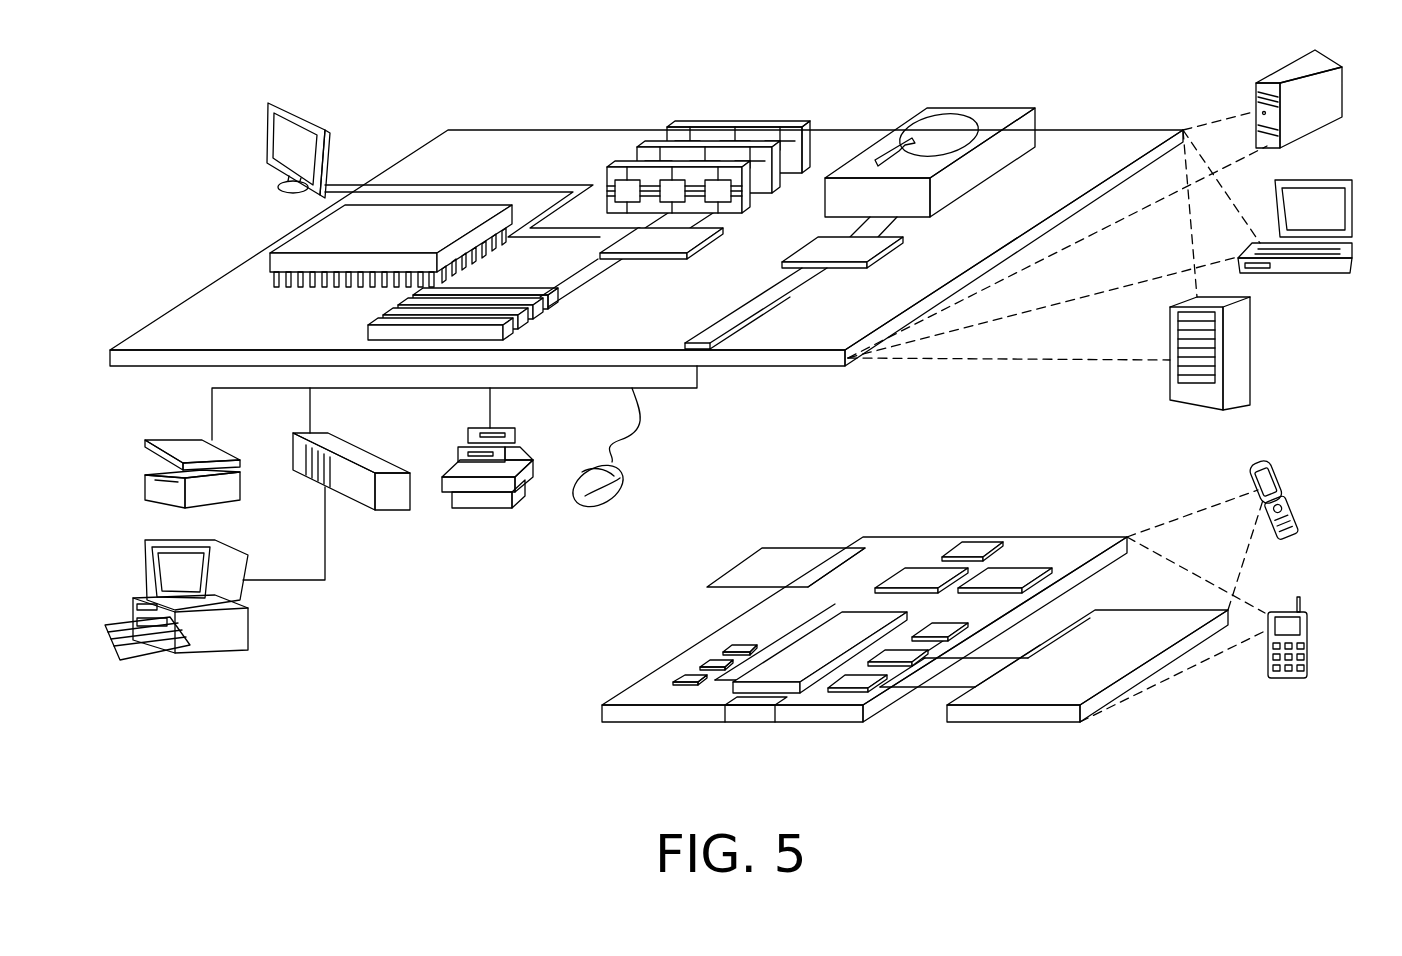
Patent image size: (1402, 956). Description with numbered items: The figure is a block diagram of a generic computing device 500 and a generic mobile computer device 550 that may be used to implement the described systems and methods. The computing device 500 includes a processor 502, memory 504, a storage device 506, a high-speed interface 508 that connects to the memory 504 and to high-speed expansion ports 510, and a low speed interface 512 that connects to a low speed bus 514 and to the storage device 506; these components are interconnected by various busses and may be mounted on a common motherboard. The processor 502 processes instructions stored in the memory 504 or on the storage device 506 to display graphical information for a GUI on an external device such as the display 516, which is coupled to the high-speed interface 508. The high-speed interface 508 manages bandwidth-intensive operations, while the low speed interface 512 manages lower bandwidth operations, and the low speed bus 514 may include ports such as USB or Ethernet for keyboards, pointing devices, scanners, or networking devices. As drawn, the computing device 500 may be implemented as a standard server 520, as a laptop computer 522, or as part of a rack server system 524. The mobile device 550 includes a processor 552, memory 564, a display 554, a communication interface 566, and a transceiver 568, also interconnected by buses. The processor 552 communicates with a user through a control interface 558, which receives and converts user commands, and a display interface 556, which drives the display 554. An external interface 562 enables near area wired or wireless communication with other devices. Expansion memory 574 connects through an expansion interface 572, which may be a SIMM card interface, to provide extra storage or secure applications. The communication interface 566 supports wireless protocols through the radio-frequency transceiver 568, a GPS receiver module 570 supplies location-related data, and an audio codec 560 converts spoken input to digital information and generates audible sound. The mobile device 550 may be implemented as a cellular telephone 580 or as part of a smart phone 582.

The computing device 500 is at (398, 80).
The processor 502 is at (296, 240).
The memory 504 is at (741, 126).
The storage device 506 is at (968, 112).
The high-speed interface 508 is at (673, 240).
The high-speed expansion ports 510 is at (395, 312).
The low speed interface 512 is at (818, 247).
The low speed bus 514 is at (705, 337).
The display 516 is at (275, 102).
The standard server 520 is at (1275, 80).
The laptop computer 522 is at (1330, 181).
The rack server system 524 is at (1250, 353).
The mobile computer device 550 is at (558, 733).
The processor 552 is at (790, 657).
The display 554 is at (1125, 623).
The display interface 556 is at (867, 678).
The control interface 558 is at (905, 653).
The audio codec 560 is at (943, 620).
The external interface 562 is at (748, 713).
The memory 564 is at (707, 663).
The communication interface 566 is at (920, 568).
The transceiver 568 is at (1012, 568).
The GPS receiver module 570 is at (970, 546).
The expansion interface 572 is at (845, 550).
The expansion memory 574 is at (762, 550).
The cellular telephone 580 is at (1268, 461).
The smart phone 582 is at (1279, 612).